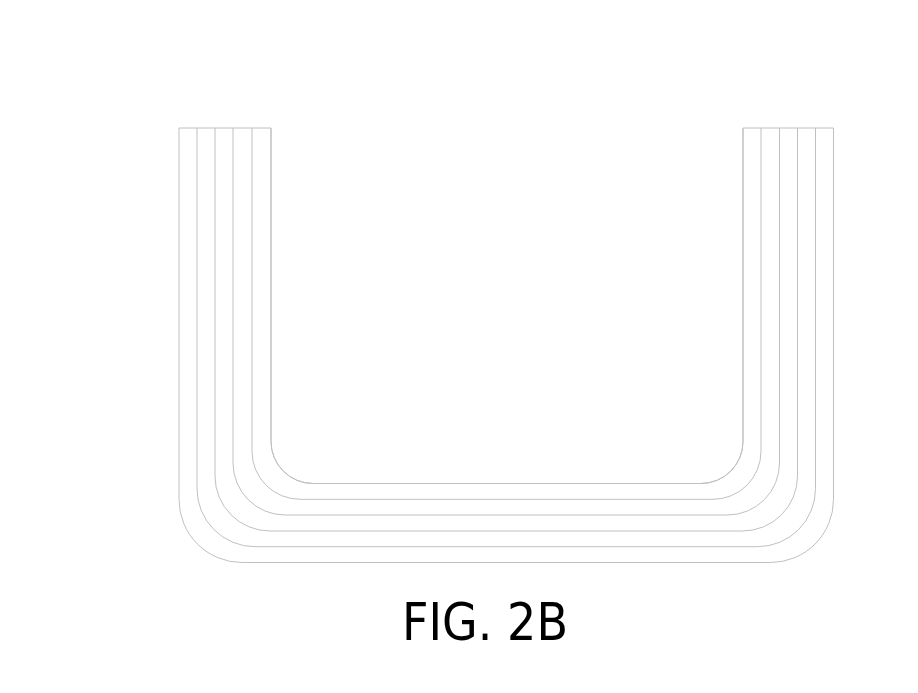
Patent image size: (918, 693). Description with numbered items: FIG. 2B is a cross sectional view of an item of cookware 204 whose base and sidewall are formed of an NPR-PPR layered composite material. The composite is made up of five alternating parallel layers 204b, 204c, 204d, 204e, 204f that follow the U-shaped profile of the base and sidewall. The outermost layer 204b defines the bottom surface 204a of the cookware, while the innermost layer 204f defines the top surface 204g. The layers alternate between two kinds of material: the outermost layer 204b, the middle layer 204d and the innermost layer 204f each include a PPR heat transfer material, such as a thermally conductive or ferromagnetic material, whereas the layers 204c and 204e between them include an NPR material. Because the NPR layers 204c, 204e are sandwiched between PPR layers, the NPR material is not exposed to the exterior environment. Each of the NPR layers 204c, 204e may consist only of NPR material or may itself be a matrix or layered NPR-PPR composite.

The item of cookware 204 is at (445, 287).
The bottom surface 204a is at (176, 207).
The outermost layer 204b is at (189, 228).
The NPR layer 204c is at (207, 326).
The PPR layer 204d is at (224, 410).
The NPR layer 204e is at (250, 264).
The innermost layer 204f is at (265, 219).
The top surface 204g is at (274, 158).